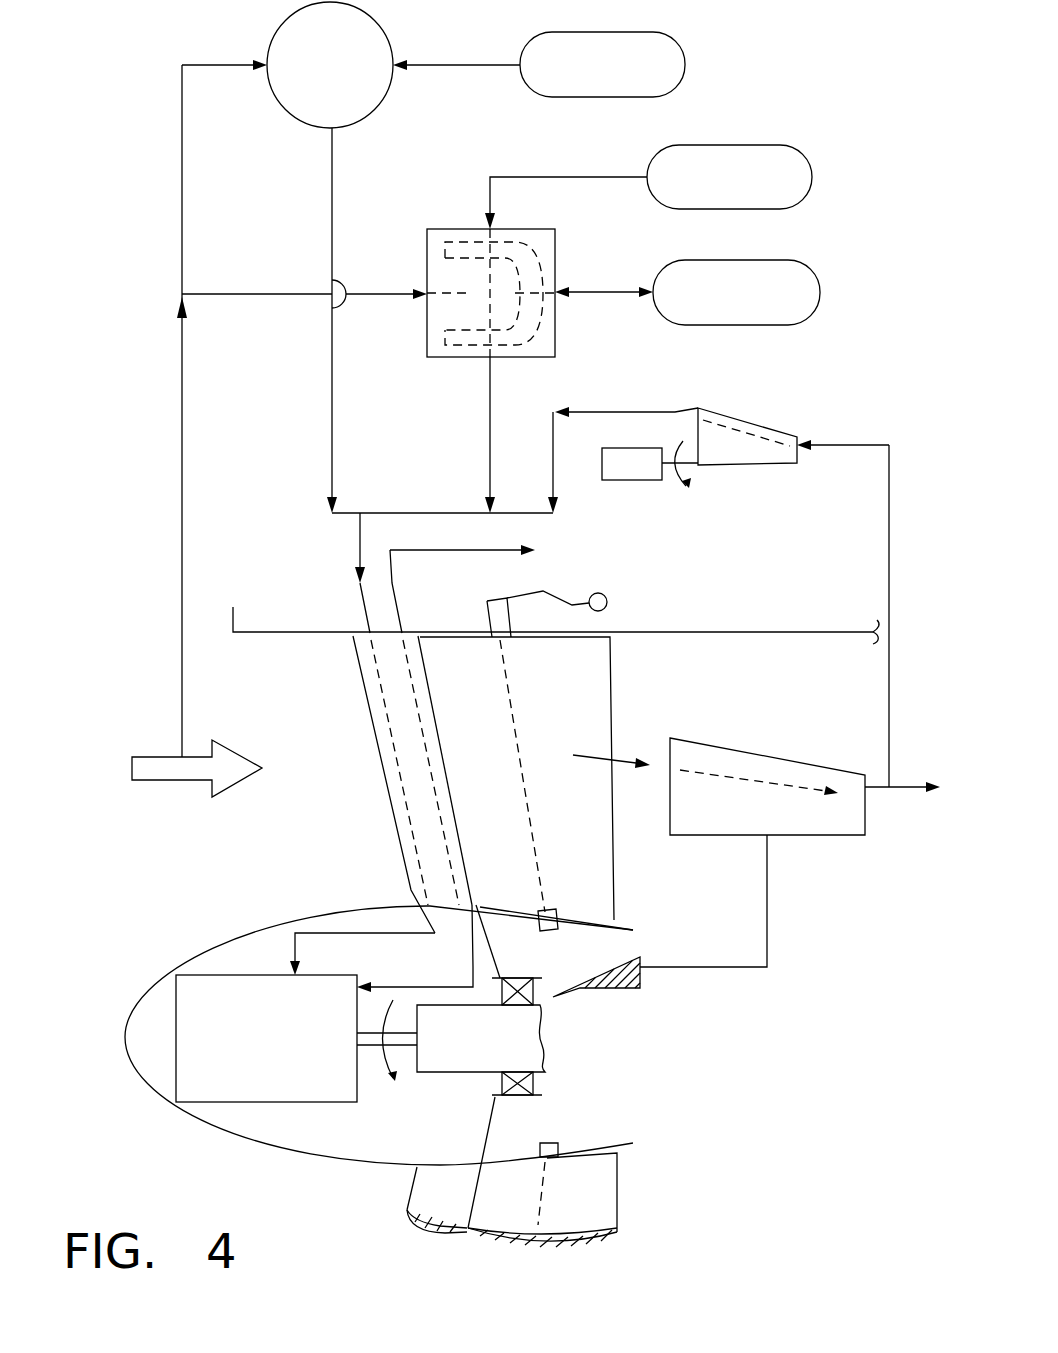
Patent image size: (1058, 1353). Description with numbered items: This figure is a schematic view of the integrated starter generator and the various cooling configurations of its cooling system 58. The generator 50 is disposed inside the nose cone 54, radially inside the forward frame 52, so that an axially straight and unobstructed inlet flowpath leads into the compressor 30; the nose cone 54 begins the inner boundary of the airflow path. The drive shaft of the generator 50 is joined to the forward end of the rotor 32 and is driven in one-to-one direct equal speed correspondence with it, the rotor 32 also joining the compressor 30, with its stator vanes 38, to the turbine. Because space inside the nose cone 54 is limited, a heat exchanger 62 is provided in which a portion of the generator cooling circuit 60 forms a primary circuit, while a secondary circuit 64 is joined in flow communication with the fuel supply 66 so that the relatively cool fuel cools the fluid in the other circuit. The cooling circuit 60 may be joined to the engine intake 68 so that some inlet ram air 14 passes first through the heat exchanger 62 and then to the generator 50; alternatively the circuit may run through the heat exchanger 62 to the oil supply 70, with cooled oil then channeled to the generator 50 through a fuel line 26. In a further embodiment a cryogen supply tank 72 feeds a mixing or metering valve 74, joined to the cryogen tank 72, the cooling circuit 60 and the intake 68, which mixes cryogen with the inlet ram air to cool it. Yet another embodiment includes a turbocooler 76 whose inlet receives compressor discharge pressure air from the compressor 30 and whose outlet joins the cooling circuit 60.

The ram air 14 is at (158, 782).
The fuel line 26 is at (604, 292).
The compressor 30 is at (756, 823).
The rotor 32 is at (556, 999).
The stator vanes 38 is at (586, 705).
The generator 50 is at (176, 1042).
The forward frame 52 is at (396, 828).
The nose cone 54 is at (256, 1152).
The cooling system 58 is at (740, 101).
The generator cooling circuit 60 is at (333, 183).
The heat exchanger 62 is at (455, 358).
The secondary circuit 64 is at (555, 340).
The fuel supply 66 is at (801, 262).
The engine intake 68 is at (236, 857).
The oil supply 70 is at (797, 147).
The cryogen supply tank 72 is at (672, 34).
The metering valve 74 is at (286, 23).
The turbocooler 76 is at (755, 420).